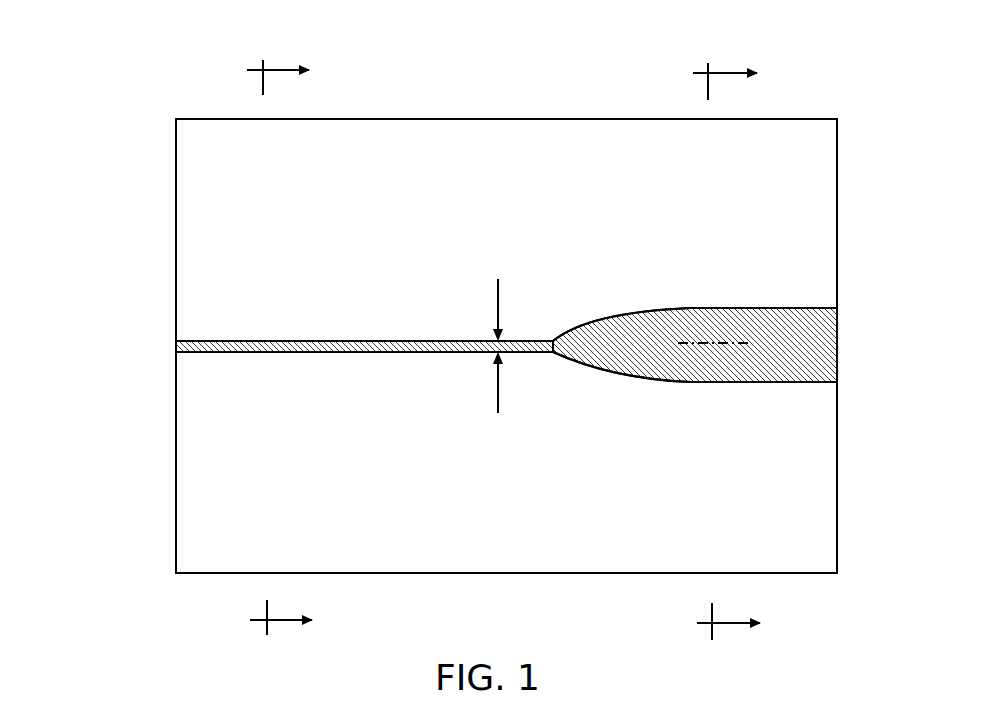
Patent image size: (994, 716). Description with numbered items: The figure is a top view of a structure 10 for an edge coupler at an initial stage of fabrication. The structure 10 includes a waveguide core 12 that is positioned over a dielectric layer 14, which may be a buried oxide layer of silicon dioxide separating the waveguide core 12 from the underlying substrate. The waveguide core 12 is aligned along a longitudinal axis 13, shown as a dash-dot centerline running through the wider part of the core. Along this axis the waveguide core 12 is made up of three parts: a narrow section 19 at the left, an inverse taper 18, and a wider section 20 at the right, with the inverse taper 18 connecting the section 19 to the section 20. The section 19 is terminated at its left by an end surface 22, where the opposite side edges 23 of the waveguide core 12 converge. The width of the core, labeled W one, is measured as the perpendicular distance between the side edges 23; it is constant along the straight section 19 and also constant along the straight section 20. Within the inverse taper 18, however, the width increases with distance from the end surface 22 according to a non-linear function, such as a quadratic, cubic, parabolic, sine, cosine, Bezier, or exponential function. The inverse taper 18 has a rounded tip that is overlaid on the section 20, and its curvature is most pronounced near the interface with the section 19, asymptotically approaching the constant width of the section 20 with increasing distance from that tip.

The structure 10 is at (140, 68).
The waveguide core 12 is at (694, 224).
The longitudinal axis 13 is at (712, 343).
The dielectric layer 14 is at (222, 525).
The inverse taper 18 is at (645, 352).
The section 19 is at (375, 343).
The section 20 is at (800, 365).
The end surface 22 is at (176, 343).
The side edges 23 is at (600, 318).